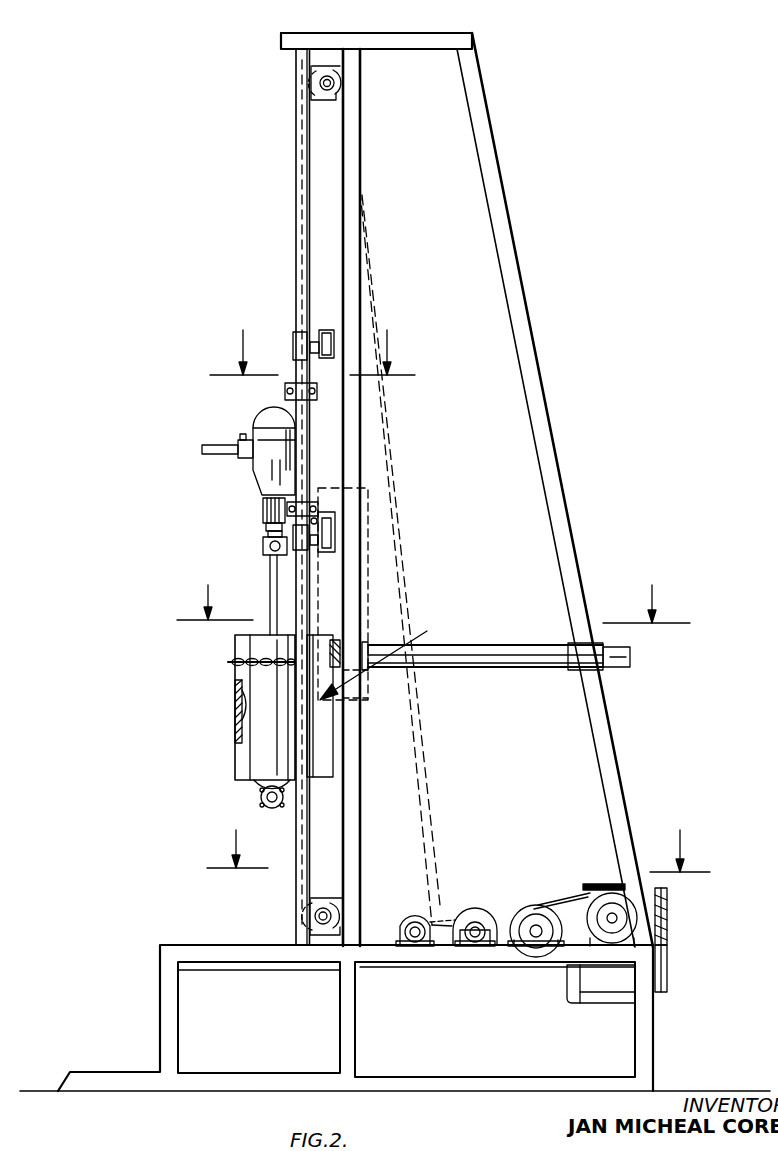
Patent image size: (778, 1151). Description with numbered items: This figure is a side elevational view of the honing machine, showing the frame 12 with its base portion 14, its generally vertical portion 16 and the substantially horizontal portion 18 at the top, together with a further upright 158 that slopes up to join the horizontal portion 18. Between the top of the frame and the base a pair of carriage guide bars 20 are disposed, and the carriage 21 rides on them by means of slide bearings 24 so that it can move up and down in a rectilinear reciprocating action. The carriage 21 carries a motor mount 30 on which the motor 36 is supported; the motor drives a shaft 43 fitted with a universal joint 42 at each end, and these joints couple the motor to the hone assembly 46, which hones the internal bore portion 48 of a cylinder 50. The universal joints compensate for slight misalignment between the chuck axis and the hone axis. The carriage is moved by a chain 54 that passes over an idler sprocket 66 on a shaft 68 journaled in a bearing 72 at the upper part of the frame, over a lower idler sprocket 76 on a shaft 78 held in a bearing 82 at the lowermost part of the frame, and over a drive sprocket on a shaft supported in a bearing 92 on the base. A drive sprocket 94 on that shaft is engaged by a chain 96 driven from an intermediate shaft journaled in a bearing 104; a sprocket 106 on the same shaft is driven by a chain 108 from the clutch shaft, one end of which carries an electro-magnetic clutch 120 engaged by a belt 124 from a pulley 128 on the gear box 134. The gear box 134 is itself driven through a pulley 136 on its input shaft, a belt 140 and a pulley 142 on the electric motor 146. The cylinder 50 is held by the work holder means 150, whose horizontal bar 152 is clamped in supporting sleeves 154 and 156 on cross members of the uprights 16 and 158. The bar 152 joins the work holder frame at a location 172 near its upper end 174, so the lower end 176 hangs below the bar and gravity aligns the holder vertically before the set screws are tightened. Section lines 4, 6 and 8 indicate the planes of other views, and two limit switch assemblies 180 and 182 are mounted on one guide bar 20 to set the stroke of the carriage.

The section line 4- 4 is at (311, 352).
The section line 6- 6 is at (433, 602).
The section line 8- 8 is at (454, 848).
The frame 12 is at (499, 176).
The base portion 14 is at (180, 1082).
The vertical portion 16 is at (357, 437).
The horizontal portion 18 is at (313, 35).
The carriage guide bars 20 is at (298, 213).
The carriage 21 is at (270, 438).
The slide bearings 24 is at (285, 391).
The motor mount 30 is at (248, 452).
The motor 36 is at (275, 465).
The universal joint 42 is at (266, 540).
The shaft 43 is at (272, 576).
The hone assembly 46 is at (235, 682).
The internal bore portion 48 is at (248, 717).
The cylinder 50 is at (237, 753).
The chain 54 is at (309, 172).
The idler sprocket 66 is at (312, 76).
The shaft 68 is at (337, 75).
The bearing 72 is at (337, 85).
The idler sprocket 76 is at (303, 927).
The shaft 78 is at (323, 906).
The bearing 82 is at (333, 913).
The bearing 92 is at (418, 948).
The drive sprocket 94 is at (413, 921).
The chain 96 is at (442, 918).
The bearing 104 is at (480, 948).
The sprocket 106 is at (470, 912).
The chain 108 is at (500, 915).
The electro-magnetic clutch 120 is at (530, 905).
The belt 124 is at (575, 883).
The pulley 128 is at (610, 890).
The gear box 134 is at (595, 882).
The pulley 136 is at (668, 905).
The belt 140 is at (667, 925).
The pulley 142 is at (667, 975).
The electric motor 146 is at (607, 995).
The work holder means 150 is at (393, 660).
The horizontal bar 152 is at (468, 655).
The supporting sleeve 154 is at (367, 643).
The supporting sleeve 156 is at (597, 643).
The upright 158 is at (571, 527).
The location 172 is at (338, 643).
The upper end 174 is at (322, 637).
The lower end 176 is at (335, 780).
The limit switch 180 is at (335, 342).
The limit switch 182 is at (337, 532).